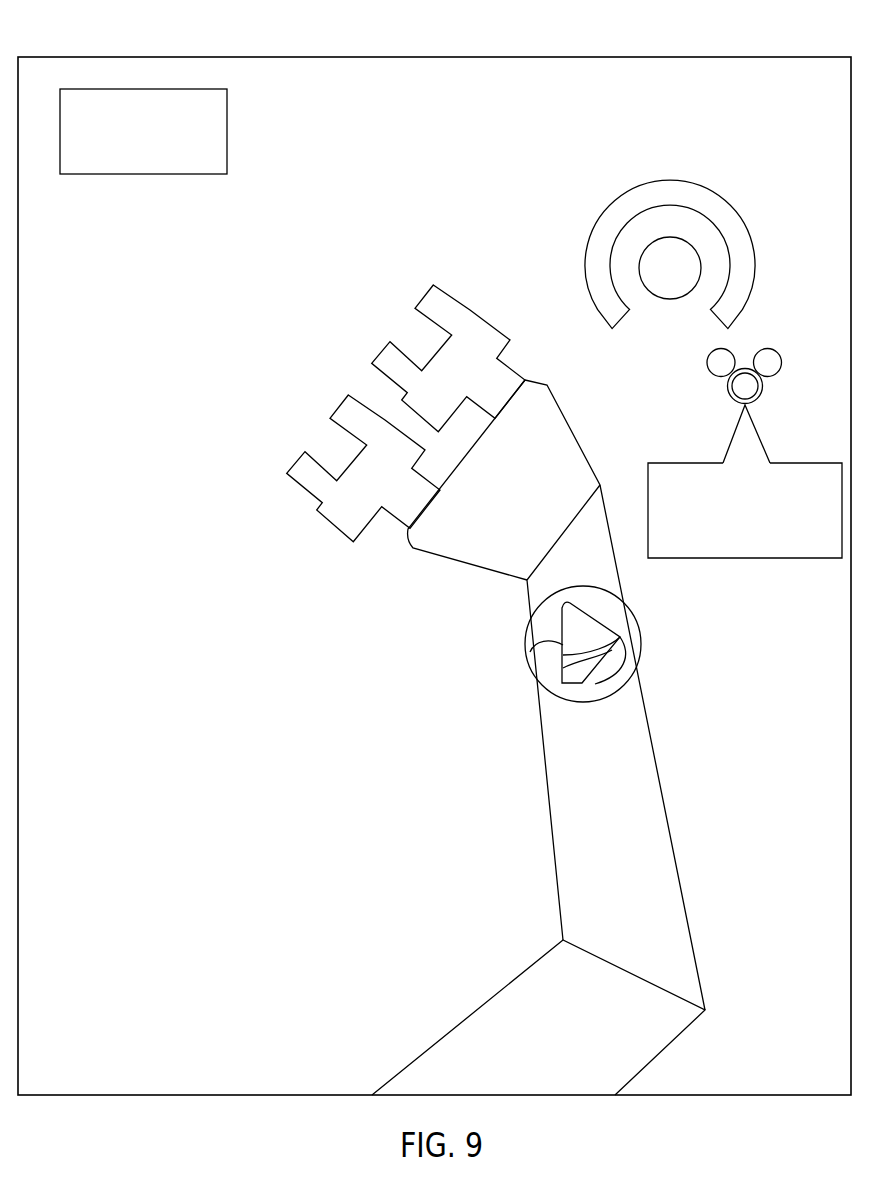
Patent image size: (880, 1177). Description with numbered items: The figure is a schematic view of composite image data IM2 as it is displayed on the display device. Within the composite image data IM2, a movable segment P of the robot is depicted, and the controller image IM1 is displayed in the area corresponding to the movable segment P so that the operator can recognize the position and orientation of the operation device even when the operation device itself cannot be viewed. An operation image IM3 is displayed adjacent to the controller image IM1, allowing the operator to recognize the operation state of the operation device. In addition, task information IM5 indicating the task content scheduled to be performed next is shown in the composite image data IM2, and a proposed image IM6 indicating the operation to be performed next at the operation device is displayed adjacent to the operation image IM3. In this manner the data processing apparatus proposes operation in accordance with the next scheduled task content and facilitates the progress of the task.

The controller image IM1 is at (533, 663).
The composite image data IM2 is at (767, 57).
The operation image IM3 is at (735, 221).
The task information IM5 is at (143, 89).
The proposed image IM6 is at (758, 558).
The movable segment P is at (580, 438).